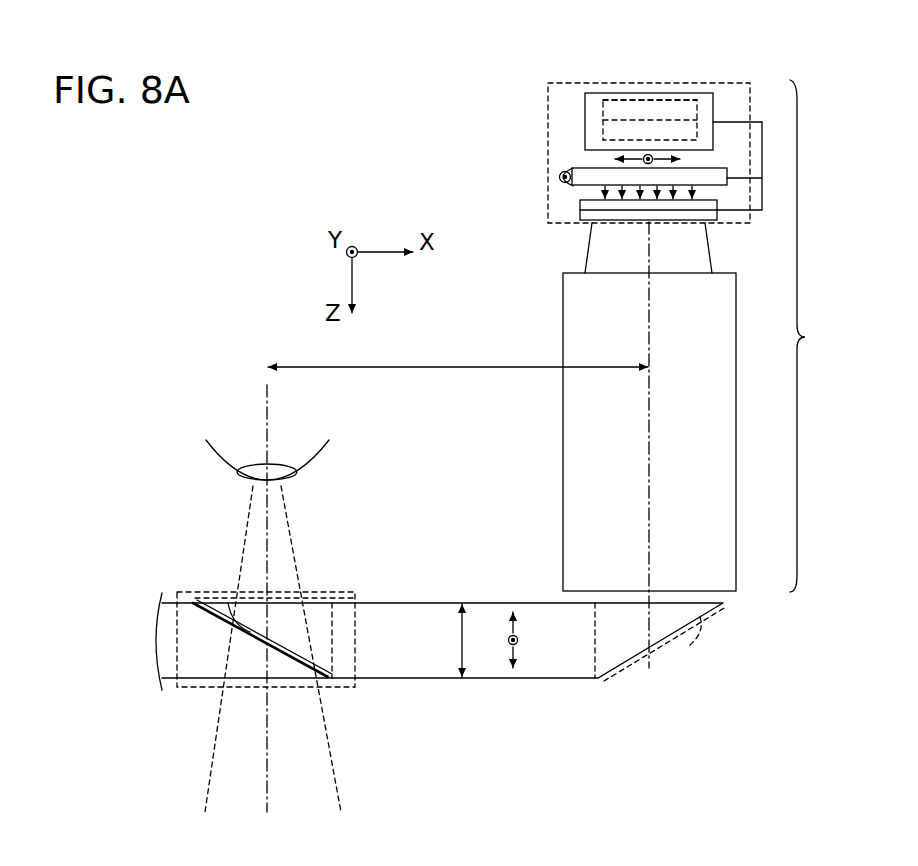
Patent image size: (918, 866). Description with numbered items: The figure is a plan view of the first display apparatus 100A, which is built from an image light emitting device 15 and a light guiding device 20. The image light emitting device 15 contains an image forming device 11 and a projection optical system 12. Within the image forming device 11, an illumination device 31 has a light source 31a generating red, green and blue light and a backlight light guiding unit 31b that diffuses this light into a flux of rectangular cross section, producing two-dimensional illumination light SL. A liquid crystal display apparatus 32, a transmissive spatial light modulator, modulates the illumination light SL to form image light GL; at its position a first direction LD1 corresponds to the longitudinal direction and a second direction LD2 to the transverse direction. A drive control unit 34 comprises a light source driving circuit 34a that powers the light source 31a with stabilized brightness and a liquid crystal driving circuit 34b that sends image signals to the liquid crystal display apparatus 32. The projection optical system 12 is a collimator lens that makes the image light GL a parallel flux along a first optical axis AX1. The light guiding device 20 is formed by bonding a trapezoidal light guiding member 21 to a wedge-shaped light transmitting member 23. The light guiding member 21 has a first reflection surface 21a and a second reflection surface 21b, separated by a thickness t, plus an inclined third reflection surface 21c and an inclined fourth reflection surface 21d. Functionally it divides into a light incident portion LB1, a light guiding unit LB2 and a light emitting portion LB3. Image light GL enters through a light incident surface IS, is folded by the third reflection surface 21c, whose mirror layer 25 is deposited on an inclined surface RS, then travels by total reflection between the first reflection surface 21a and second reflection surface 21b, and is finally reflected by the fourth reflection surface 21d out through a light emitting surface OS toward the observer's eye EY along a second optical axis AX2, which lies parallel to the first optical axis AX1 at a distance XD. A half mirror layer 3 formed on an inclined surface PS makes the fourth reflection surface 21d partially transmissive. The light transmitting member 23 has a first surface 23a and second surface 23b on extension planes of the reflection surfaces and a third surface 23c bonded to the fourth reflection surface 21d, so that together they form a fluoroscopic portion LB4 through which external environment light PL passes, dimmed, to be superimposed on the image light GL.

The first display apparatus 100A is at (368, 157).
The image light emitting device 15 is at (816, 336).
The image forming device 11 is at (575, 83).
The drive control unit 34 is at (615, 93).
The light source driving circuit 34a is at (655, 140).
The liquid crystal driving circuit 34b is at (684, 85).
The illumination device 31 is at (540, 160).
The light source 31a is at (556, 170).
The backlight light guiding unit 31b is at (572, 168).
The liquid crystal display apparatus 32 is at (580, 205).
The projection optical system 12 is at (563, 415).
The light guiding device 20 is at (460, 700).
The light guiding member 21 is at (562, 660).
The first reflection surface 21a is at (422, 602).
The second reflection surface 21b is at (525, 680).
The third reflection surface 21c is at (628, 664).
The fourth reflection surface 21d is at (232, 640).
The mirror layer 25 is at (664, 648).
The light transmitting member 23 is at (200, 660).
The first surface 23a is at (190, 603).
The second surface 23b is at (222, 657).
The third surface 23c is at (302, 603).
The half mirror layer 3 is at (217, 610).
The inclined surface RS is at (280, 655).
The eye EY is at (208, 458).
The external environment light PL is at (240, 530).
The image light GL is at (708, 228).
The first optical axis AX1 is at (650, 263).
The second optical axis AX2 is at (267, 400).
The distance XD is at (458, 352).
The light incident surface IS is at (620, 602).
The light emitting surface OS is at (243, 602).
The inclined surface PS is at (688, 635).
The illumination light SL is at (698, 182).
The first direction LD1 is at (652, 156).
The second direction LD2 is at (644, 156).
The light incident portion LB1 is at (680, 647).
The light guiding unit LB2 is at (404, 690).
The light emitting portion LB3 is at (337, 638).
The fluoroscopic portion LB4 is at (345, 683).
The thickness t is at (468, 640).